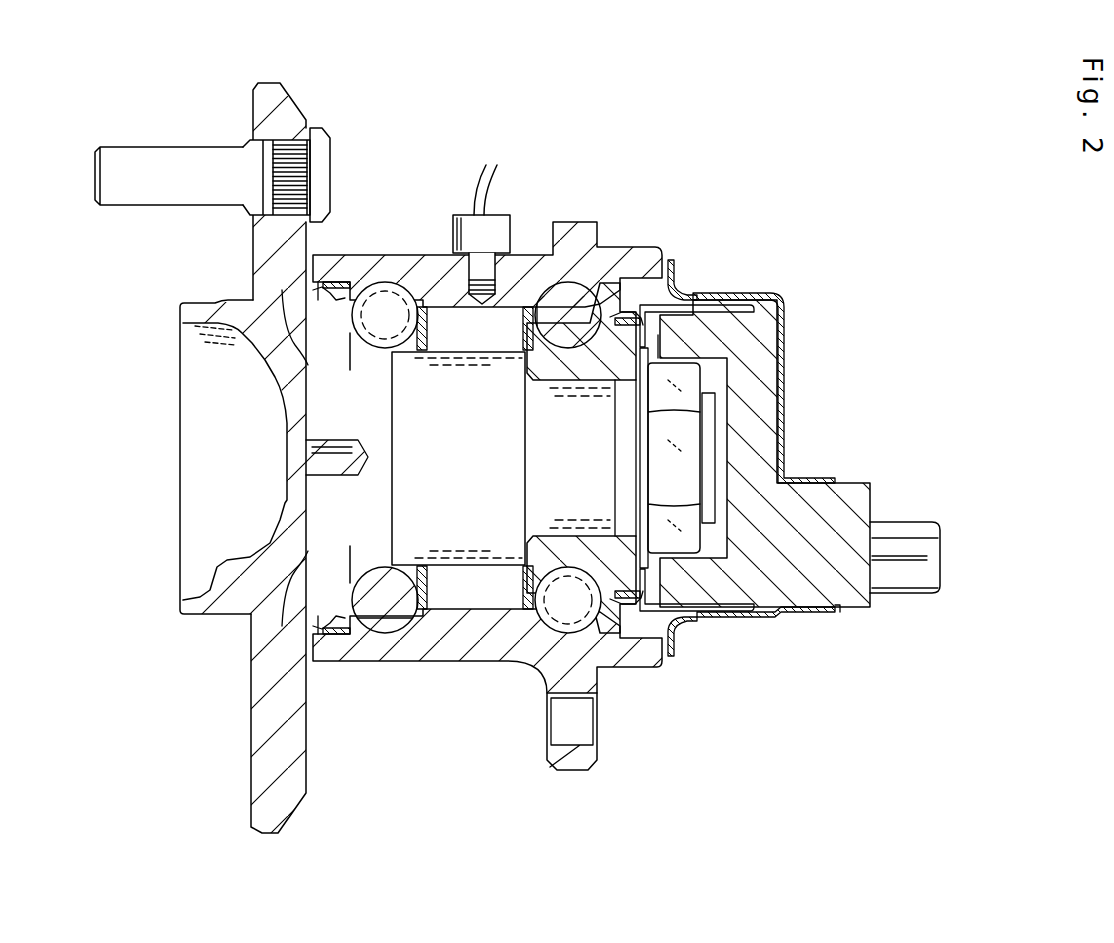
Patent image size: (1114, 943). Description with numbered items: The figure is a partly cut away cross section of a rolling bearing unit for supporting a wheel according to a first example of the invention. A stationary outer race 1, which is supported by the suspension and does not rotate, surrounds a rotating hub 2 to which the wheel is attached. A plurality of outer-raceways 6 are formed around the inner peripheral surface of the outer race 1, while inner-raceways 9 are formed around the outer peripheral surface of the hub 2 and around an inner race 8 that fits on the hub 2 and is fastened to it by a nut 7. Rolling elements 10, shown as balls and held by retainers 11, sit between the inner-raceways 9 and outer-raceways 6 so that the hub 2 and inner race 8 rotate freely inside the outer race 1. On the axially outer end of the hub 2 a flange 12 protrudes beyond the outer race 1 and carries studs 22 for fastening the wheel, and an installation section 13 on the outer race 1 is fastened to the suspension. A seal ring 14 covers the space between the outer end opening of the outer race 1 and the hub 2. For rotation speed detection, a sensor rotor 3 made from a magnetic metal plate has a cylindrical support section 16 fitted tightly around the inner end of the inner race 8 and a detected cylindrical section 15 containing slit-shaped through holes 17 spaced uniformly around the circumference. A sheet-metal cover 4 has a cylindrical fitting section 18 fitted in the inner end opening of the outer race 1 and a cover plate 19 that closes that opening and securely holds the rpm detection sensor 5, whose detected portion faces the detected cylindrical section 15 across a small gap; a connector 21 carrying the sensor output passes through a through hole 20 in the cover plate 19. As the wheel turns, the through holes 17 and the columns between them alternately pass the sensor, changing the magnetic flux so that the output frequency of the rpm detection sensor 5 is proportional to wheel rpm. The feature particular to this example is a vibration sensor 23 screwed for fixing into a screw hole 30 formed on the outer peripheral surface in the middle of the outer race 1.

The outer race 1 is at (455, 655).
The hub 2 is at (203, 607).
The sensor rotor 3 is at (700, 305).
The cover 4 is at (783, 385).
The rpm detection sensor 5 is at (765, 437).
The outer-raceways 6 is at (393, 282).
The nut 7 is at (660, 405).
The inner race 8 is at (608, 585).
The inner-raceways 9 is at (570, 563).
The rolling elements 10 is at (393, 352).
The retainers 11 is at (582, 290).
The flange 12 is at (290, 103).
The installation section 13 is at (582, 760).
The seal ring 14 is at (303, 688).
The detected cylindrical section 15 is at (687, 610).
The cylindrical support section 16 is at (660, 270).
The through holes 17 is at (728, 300).
The cylindrical fitting section 18 is at (633, 640).
The cover plate 19 is at (783, 343).
The through hole 20 is at (822, 614).
The connector 21 is at (908, 525).
The studs 22 is at (177, 158).
The vibration sensor 23 is at (468, 222).
The screw hole 30 is at (492, 268).